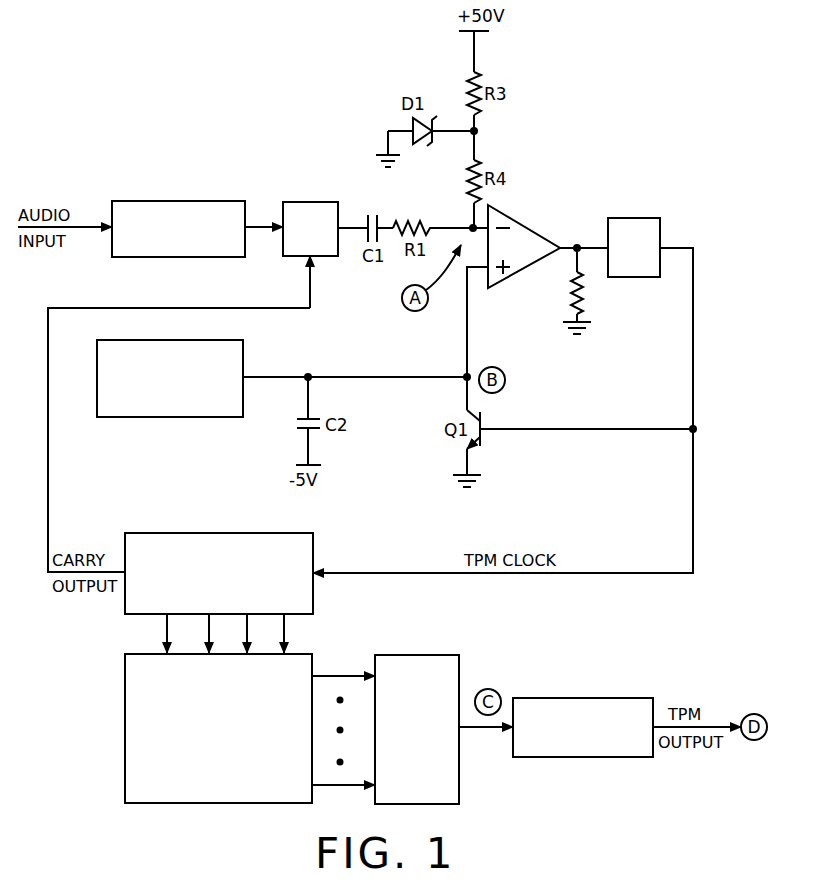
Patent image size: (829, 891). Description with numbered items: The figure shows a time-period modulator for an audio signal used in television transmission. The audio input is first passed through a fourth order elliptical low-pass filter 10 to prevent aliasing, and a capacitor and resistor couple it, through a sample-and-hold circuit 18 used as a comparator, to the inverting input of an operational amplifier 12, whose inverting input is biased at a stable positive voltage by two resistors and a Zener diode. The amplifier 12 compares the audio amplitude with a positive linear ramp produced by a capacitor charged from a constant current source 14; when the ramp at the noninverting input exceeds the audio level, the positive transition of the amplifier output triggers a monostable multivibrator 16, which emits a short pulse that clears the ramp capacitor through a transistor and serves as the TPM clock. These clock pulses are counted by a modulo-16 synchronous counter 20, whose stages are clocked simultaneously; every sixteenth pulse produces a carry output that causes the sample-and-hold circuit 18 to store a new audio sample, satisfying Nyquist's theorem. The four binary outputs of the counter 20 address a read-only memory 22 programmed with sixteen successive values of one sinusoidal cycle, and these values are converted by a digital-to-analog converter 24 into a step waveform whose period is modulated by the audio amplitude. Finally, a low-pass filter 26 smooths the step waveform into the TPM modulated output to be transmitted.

The low-pass filter 10 is at (200, 201).
The operational amplifier 12 is at (531, 224).
The constant current source 14 is at (186, 417).
The monostable multivibrator 16 is at (660, 224).
The sample-and-hold circuit 18 is at (312, 202).
The modulo-16 synchronous counter 20 is at (313, 552).
The read-only memory 22 is at (125, 740).
The digital-to-analog converter 24 is at (432, 655).
The low-pass filter 26 is at (596, 698).